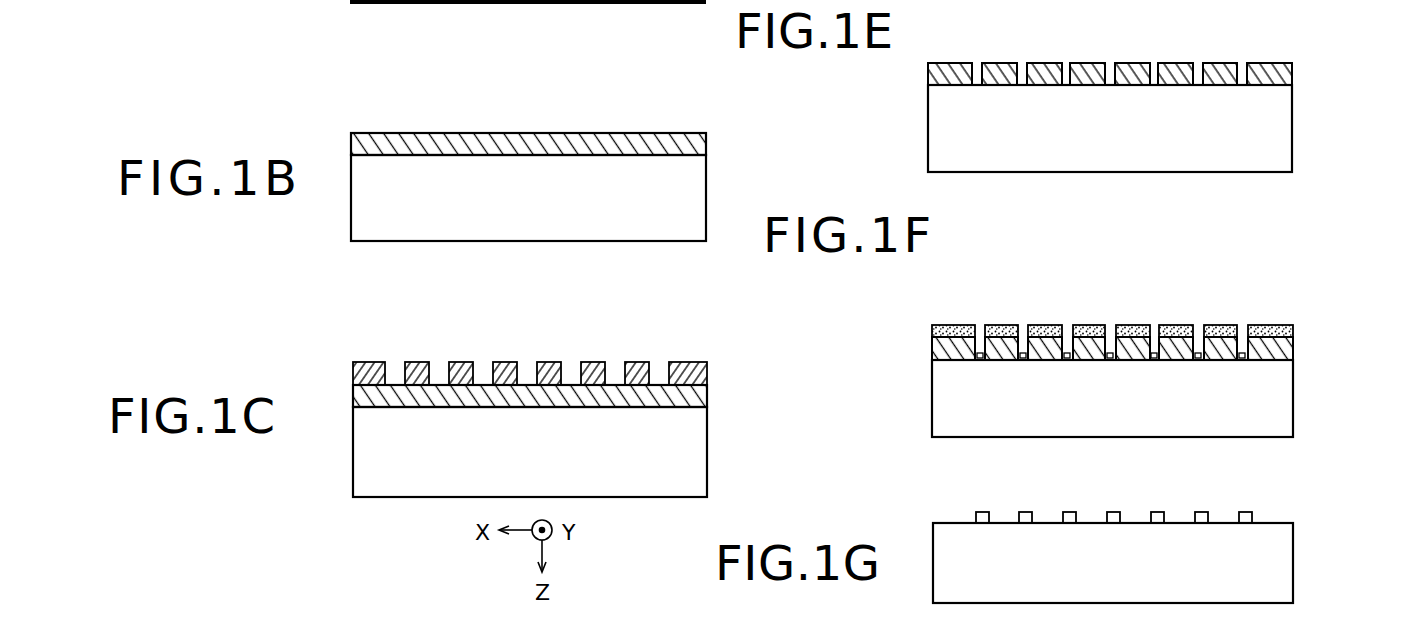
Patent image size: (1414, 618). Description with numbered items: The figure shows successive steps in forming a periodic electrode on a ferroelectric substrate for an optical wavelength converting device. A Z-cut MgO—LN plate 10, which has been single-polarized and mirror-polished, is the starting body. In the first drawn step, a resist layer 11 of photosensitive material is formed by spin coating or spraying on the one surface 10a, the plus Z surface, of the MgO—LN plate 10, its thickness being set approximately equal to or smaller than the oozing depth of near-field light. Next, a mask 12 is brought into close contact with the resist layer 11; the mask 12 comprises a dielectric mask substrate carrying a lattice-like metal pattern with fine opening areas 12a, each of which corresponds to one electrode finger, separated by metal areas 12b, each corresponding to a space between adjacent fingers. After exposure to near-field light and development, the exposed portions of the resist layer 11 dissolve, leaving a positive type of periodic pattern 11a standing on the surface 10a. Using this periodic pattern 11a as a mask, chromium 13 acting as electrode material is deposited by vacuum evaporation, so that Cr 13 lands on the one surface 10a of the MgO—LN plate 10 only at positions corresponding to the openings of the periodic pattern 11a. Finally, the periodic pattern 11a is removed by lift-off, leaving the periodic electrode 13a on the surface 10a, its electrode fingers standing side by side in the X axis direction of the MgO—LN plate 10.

In FIG. 1B, the MgO—LN plate 10 is at (712, 196).
In FIG. 1C, the MgO—LN plate 10 is at (714, 445).
In FIG. 1E, the MgO—LN plate 10 is at (1298, 127).
In FIG. 1F, the MgO—LN plate 10 is at (1299, 397).
In FIG. 1G, the MgO—LN plate 10 is at (1300, 553).
In FIG. 1B, the one surface (+Z surface) of the MgO—LN plate 10a is at (538, 155).
In FIG. 1F, the one surface (+Z surface) of the MgO—LN plate 10a is at (953, 325).
In FIG. 1G, the one surface (+Z surface) of the MgO—LN plate 10a is at (950, 523).
In FIG. 1B, the resist layer 11 is at (706, 145).
In FIG. 1C, the resist layer 11 is at (707, 400).
In FIG. 1E, the periodic pattern of the resist layer 11a is at (1275, 63).
In FIG. 1F, the periodic pattern of the resist layer 11a is at (1293, 346).
In FIG. 1C, the mask 12 is at (565, 341).
In FIG. 1C, the opening areas 12a is at (654, 372).
In FIG. 1C, the metal areas 12b is at (591, 362).
In FIG. 1F, the chromium (Cr) 13 is at (1272, 325).
In FIG. 1G, the periodic electrode 13a is at (1205, 512).